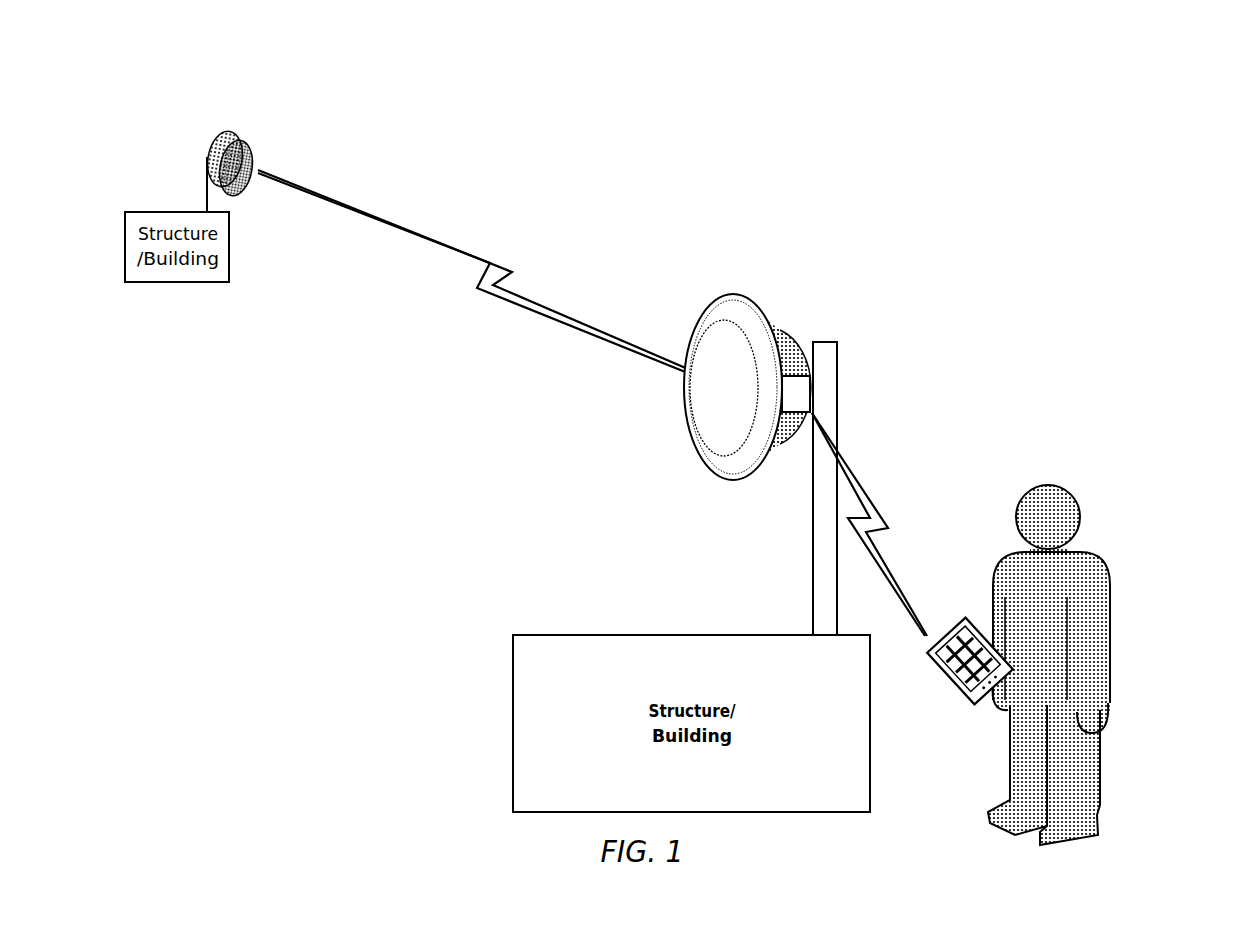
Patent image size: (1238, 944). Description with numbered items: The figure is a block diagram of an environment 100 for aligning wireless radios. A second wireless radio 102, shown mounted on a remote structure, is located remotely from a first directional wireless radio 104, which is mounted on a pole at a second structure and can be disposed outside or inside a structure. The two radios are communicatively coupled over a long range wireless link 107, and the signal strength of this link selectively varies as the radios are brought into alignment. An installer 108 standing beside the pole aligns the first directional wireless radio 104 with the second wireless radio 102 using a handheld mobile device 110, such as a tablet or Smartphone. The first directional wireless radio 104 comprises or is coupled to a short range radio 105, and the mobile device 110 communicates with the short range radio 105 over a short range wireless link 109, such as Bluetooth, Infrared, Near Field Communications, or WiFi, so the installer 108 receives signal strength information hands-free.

The environment 100 is at (1006, 140).
The second wireless radio 102 is at (255, 130).
The first directional wireless radio 104 is at (773, 327).
The short range radio 105 is at (815, 373).
The long range wireless link 107 is at (490, 262).
The installer 108 is at (1065, 518).
The short range wireless link 109 is at (918, 597).
The mobile device 110 is at (950, 682).